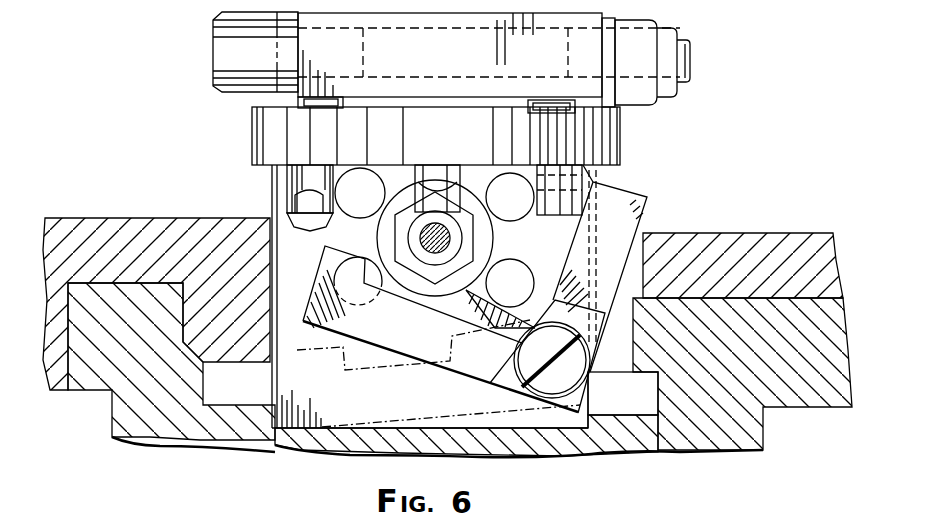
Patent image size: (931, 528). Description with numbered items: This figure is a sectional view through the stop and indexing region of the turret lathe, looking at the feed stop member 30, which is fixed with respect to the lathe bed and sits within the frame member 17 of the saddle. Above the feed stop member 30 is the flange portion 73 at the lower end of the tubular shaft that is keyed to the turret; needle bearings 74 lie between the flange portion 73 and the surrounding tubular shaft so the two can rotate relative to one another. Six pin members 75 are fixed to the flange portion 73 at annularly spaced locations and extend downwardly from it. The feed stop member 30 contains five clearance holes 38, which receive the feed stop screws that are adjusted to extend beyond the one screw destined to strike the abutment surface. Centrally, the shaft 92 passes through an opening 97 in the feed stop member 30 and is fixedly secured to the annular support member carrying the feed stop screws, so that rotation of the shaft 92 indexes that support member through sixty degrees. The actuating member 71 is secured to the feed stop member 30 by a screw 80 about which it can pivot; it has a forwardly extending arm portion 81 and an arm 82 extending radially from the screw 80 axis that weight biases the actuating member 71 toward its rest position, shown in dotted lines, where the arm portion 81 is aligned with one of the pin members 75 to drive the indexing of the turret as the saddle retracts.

The frame member 17 is at (118, 216).
The feed stop member 30 is at (300, 238).
The clearance holes 38 is at (500, 236).
The actuating member 71 is at (630, 268).
The flange portion 73 is at (625, 138).
The needle bearings 74 is at (277, 99).
The pin members 75 is at (287, 169).
The screw 80 is at (575, 373).
The arm portion 81 is at (640, 204).
The arm 82 is at (307, 283).
The shaft 92 is at (420, 233).
The opening 97 is at (437, 297).